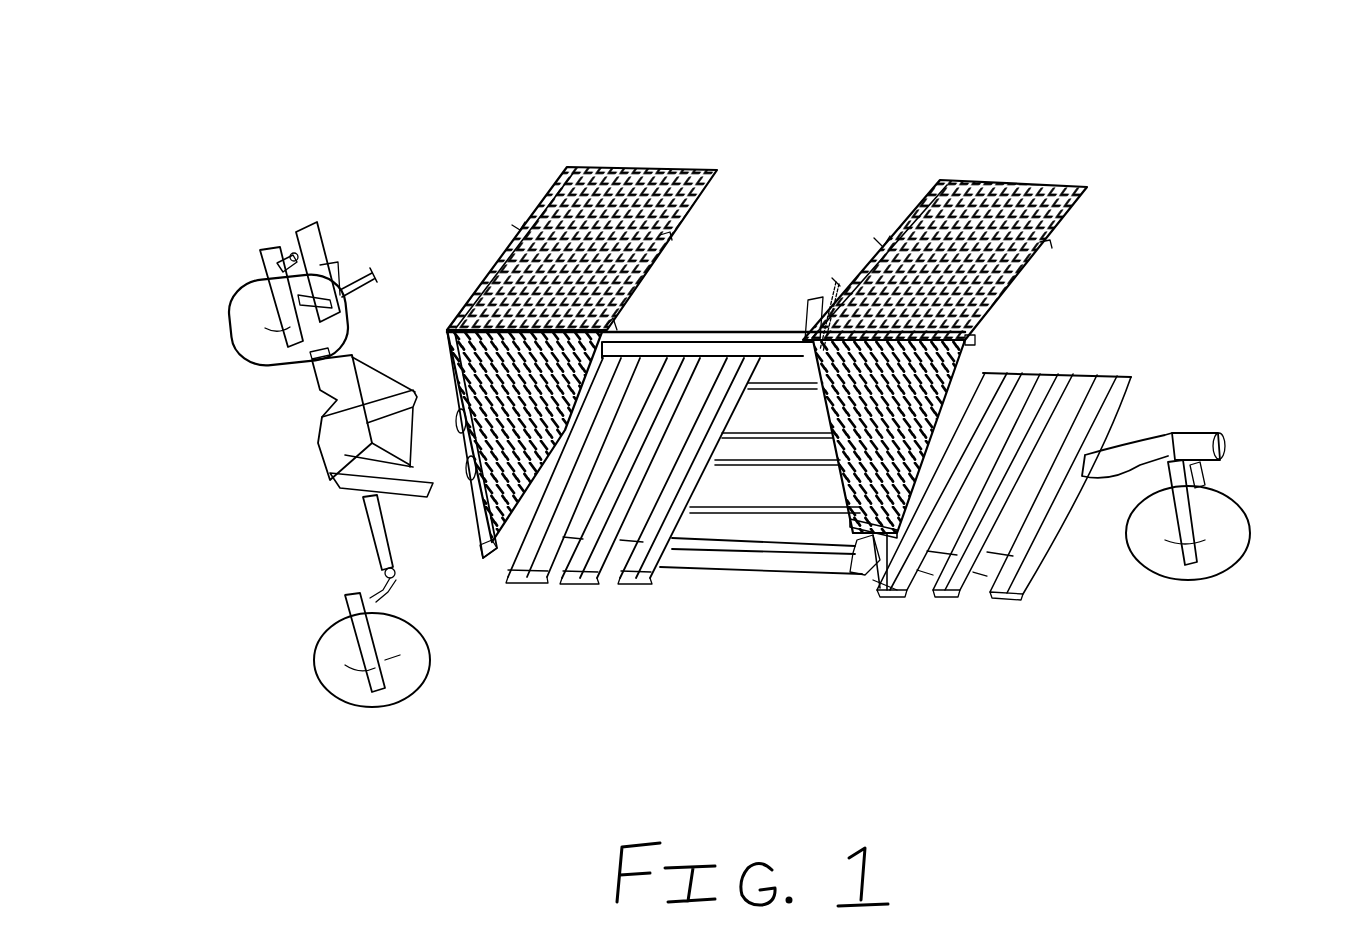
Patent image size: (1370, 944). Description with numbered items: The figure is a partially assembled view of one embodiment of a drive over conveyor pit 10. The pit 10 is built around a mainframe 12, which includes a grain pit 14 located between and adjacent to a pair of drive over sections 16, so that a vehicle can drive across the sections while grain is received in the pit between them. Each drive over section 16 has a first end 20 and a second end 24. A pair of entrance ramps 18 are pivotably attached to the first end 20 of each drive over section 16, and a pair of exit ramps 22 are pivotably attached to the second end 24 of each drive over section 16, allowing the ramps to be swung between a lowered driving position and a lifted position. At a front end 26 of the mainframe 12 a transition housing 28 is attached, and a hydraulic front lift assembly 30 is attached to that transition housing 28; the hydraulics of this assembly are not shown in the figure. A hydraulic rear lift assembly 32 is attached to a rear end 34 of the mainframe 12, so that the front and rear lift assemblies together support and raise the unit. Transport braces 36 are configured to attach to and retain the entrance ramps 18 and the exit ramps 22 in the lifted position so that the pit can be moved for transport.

The drive over conveyor pit 10 is at (908, 79).
The mainframe 12 is at (771, 630).
The grain pit 14 is at (712, 322).
The drive over sections 16 is at (764, 308).
The entrance ramps 18 is at (592, 162).
The first end 20 is at (450, 332).
The exit ramps 22 is at (1100, 375).
The second end 24 is at (551, 560).
The front end 26 is at (442, 470).
The transition housing 28 is at (313, 418).
The hydraulic front lift assembly 30 is at (260, 257).
The hydraulic rear lift assembly 32 is at (1193, 430).
The rear end 34 is at (985, 348).
The transport braces 36 is at (615, 325).